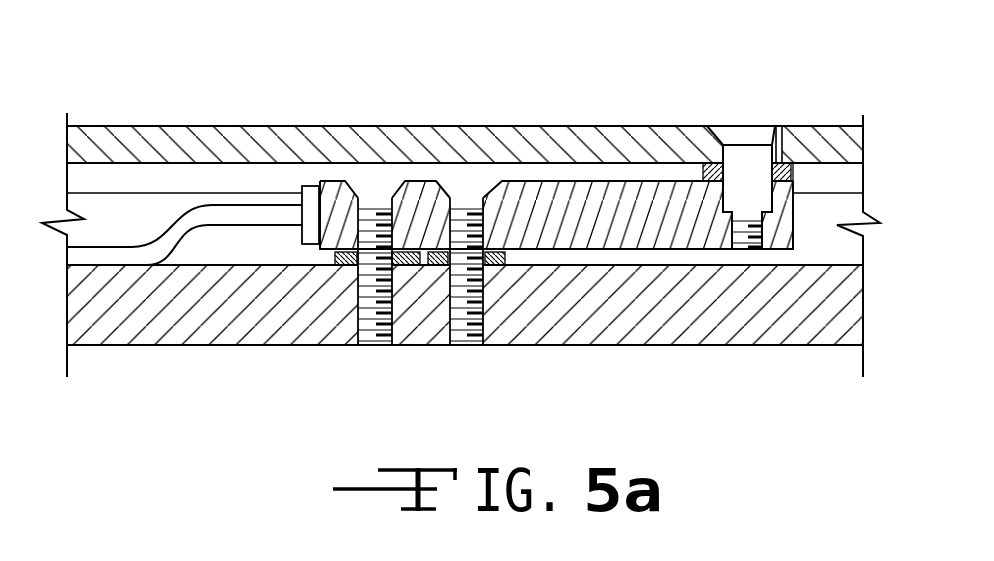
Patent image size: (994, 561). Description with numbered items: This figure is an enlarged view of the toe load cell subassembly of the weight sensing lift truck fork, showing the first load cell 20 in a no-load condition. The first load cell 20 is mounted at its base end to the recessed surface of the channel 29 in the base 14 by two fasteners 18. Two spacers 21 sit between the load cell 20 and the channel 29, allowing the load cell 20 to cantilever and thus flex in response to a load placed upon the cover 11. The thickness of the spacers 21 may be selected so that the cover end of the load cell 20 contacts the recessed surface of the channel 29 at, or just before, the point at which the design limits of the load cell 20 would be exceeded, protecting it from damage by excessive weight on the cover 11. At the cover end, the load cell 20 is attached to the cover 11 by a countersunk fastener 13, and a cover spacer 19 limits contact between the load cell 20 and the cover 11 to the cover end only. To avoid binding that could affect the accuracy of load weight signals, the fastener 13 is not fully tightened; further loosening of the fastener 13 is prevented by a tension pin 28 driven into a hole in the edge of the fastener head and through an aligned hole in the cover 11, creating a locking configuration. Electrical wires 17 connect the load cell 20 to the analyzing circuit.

The cover 11 is at (112, 143).
The fastener 13 is at (745, 132).
The base 14 is at (657, 317).
The electrical wires 17 is at (224, 212).
The fasteners 18 is at (370, 190).
The cover spacer 19 is at (787, 173).
The first load cell 20 is at (567, 203).
The spacers 21 is at (333, 253).
The tension pin 28 is at (779, 128).
The channel 29 is at (225, 247).